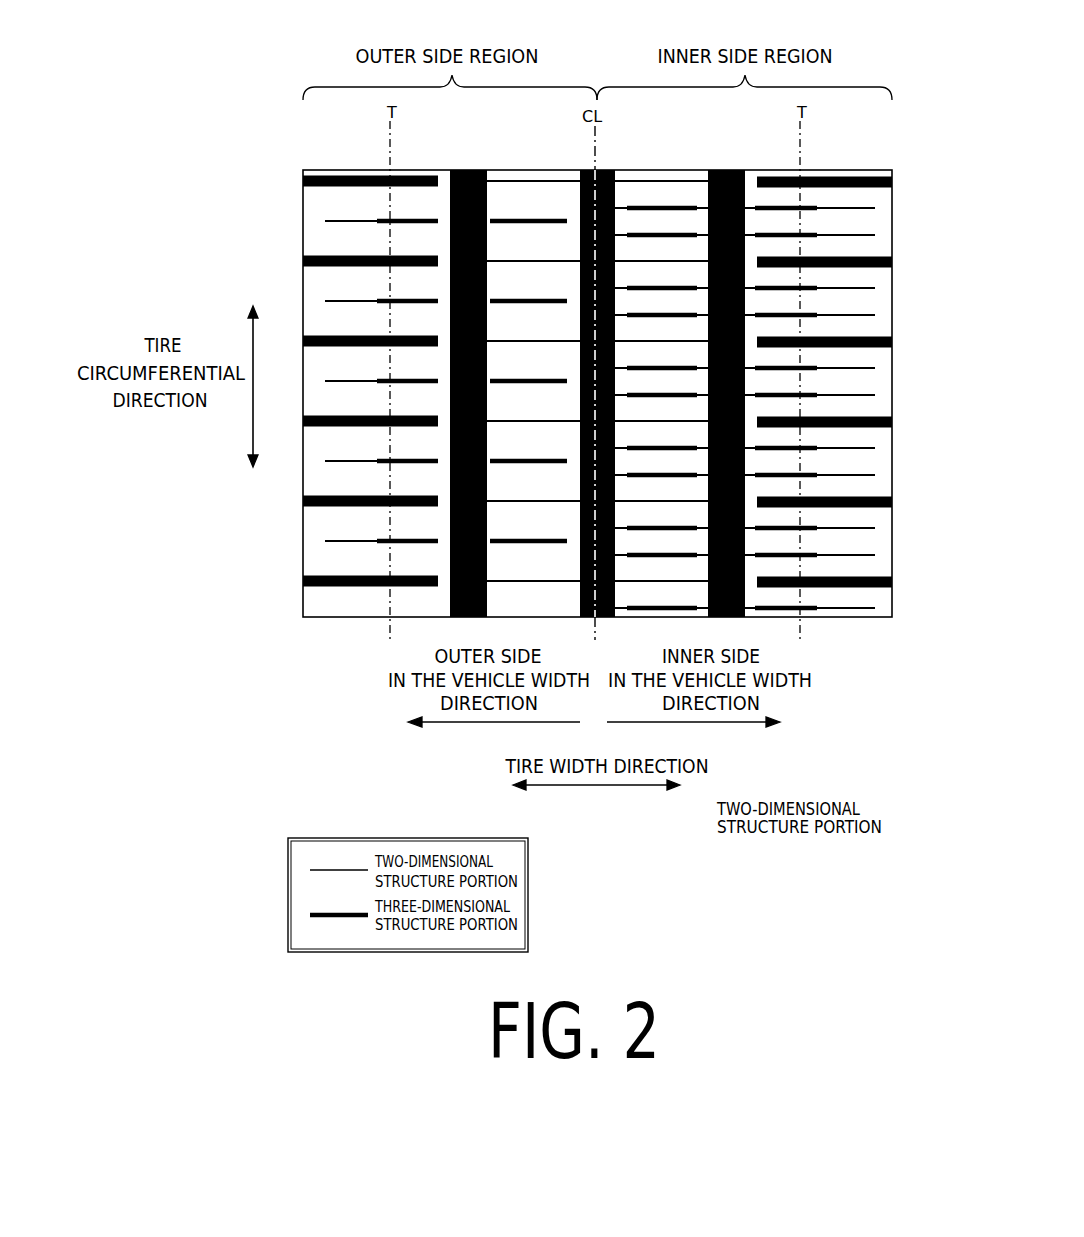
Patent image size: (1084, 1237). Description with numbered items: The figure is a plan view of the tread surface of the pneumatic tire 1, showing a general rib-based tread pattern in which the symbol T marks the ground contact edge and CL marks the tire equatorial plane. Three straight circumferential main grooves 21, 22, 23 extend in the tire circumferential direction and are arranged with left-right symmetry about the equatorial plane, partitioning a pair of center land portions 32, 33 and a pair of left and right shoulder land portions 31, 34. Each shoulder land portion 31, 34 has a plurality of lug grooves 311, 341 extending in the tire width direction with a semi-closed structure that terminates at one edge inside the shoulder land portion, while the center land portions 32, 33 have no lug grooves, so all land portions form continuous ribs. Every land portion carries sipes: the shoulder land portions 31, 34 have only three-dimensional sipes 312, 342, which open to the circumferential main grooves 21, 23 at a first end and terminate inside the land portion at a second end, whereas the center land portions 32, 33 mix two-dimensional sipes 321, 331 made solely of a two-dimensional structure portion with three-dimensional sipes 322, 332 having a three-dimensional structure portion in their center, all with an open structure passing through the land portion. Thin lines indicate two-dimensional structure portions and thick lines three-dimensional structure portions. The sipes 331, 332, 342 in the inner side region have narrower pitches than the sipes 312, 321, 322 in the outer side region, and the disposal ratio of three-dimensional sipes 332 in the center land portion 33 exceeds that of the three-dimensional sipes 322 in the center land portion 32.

The pneumatic tire 1 is at (849, 42).
The circumferential main groove 21 is at (463, 171).
The circumferential main groove 22 is at (608, 171).
The circumferential main groove 23 is at (725, 171).
The shoulder land portion 31 is at (370, 339).
The lug groove 311 is at (340, 172).
The sipe 312 is at (412, 218).
The center land portion 32 is at (528, 339).
The sipe 321 is at (512, 180).
The sipe 322 is at (555, 217).
The center land portion 33 is at (667, 353).
The sipe 331 is at (642, 181).
The sipe 332 is at (670, 206).
The shoulder land portion 34 is at (818, 353).
The lug groove 341 is at (863, 177).
The sipe 342 is at (767, 207).